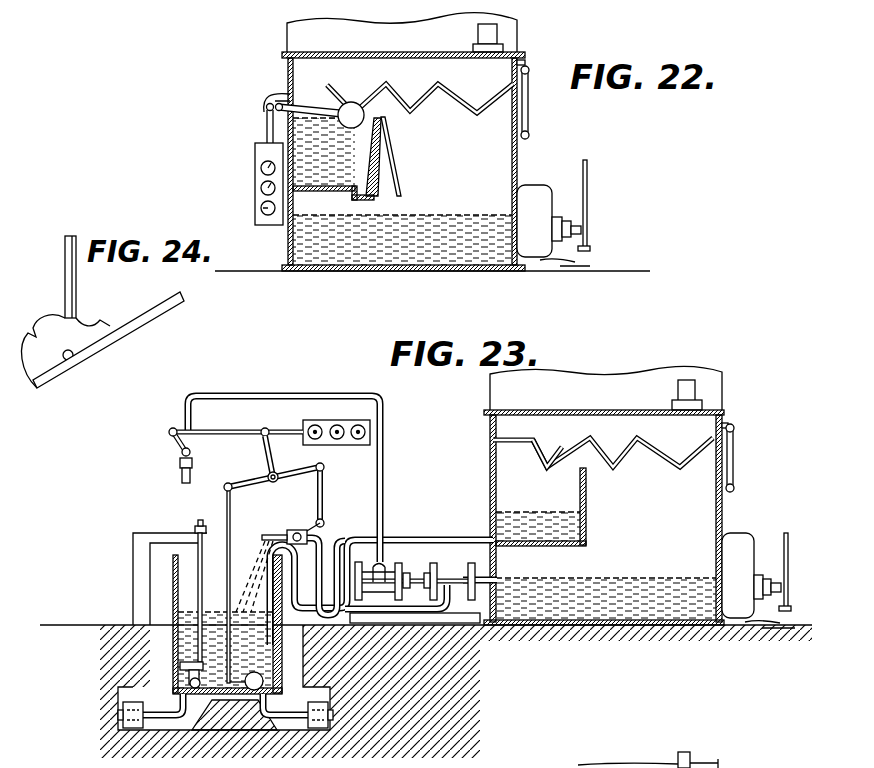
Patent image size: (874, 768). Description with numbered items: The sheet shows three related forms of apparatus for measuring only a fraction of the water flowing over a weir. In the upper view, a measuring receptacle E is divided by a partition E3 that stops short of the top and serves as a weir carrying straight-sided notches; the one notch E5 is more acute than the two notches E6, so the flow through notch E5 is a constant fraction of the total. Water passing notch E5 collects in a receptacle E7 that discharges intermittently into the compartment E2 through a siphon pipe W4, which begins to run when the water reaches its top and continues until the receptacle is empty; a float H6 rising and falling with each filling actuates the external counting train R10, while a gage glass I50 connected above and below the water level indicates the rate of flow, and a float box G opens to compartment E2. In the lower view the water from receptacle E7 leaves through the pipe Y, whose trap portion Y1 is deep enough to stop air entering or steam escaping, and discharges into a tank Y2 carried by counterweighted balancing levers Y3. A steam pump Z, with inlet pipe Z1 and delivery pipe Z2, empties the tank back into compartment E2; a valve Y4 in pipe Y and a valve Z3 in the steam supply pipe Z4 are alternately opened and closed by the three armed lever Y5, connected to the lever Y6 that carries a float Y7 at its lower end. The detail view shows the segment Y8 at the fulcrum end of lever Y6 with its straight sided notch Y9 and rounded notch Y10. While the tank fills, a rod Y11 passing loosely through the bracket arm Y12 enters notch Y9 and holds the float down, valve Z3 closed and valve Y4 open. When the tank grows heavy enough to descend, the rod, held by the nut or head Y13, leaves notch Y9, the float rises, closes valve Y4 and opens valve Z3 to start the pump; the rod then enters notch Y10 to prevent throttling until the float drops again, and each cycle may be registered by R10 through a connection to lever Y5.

In FIG. 22, the measuring box or receptacle E is at (520, 148).
In FIG. 23, the measuring box or receptacle E is at (723, 505).
In FIG. 22, the compartment E2 is at (402, 219).
In FIG. 23, the compartment E2 is at (606, 575).
In FIG. 22, the partition or barrier E3 is at (520, 65).
In FIG. 23, the partition or barrier E3 is at (735, 425).
In FIG. 22, the weir notch E5 is at (347, 93).
In FIG. 23, the weir notch E5 is at (549, 460).
In FIG. 22, the weir notches E6 is at (471, 97).
In FIG. 23, the weir notches E6 is at (673, 460).
In FIG. 22, the receptacle E7 is at (290, 136).
In FIG. 23, the receptacle E7 is at (541, 507).
In FIG. 22, the float box G is at (553, 213).
In FIG. 23, the float box G is at (742, 560).
In FIG. 22, the float H6 is at (348, 118).
In FIG. 22, the gage glass I50 is at (523, 107).
In FIG. 23, the gage glass I50 is at (734, 456).
In FIG. 22, the counting train or registering device R10 is at (256, 180).
In FIG. 23, the counting train or registering device R10 is at (330, 420).
In FIG. 22, the siphon pipe W4 is at (398, 163).
In FIG. 23, the pipe Y is at (427, 536).
In FIG. 23, the trap or seal portion Y1 is at (333, 542).
In FIG. 23, the tank Y2 is at (173, 572).
In FIG. 23, the counterweighted balancing levers Y3 is at (292, 714).
In FIG. 23, the valve Y4 is at (294, 532).
In FIG. 23, the three armed lever Y5 is at (268, 459).
In FIG. 24, the lever Y6 is at (143, 321).
In FIG. 23, the lever Y6 is at (226, 696).
In FIG. 23, the float Y7 is at (266, 681).
In FIG. 24, the segment Y8 is at (54, 362).
In FIG. 24, the straight sided notch Y9 is at (36, 332).
In FIG. 24, the rounded notch Y10 is at (97, 322).
In FIG. 23, the rod Y11 is at (200, 600).
In FIG. 23, the bracket arm Y12 is at (162, 533).
In FIG. 23, the nut or head Y13 is at (205, 531).
In FIG. 23, the steam pump Z is at (418, 572).
In FIG. 23, the inlet pipe Z1 is at (385, 612).
In FIG. 23, the delivery pipe Z2 is at (485, 580).
In FIG. 23, the valve Z3 is at (180, 458).
In FIG. 23, the steam supply pipe Z4 is at (384, 463).